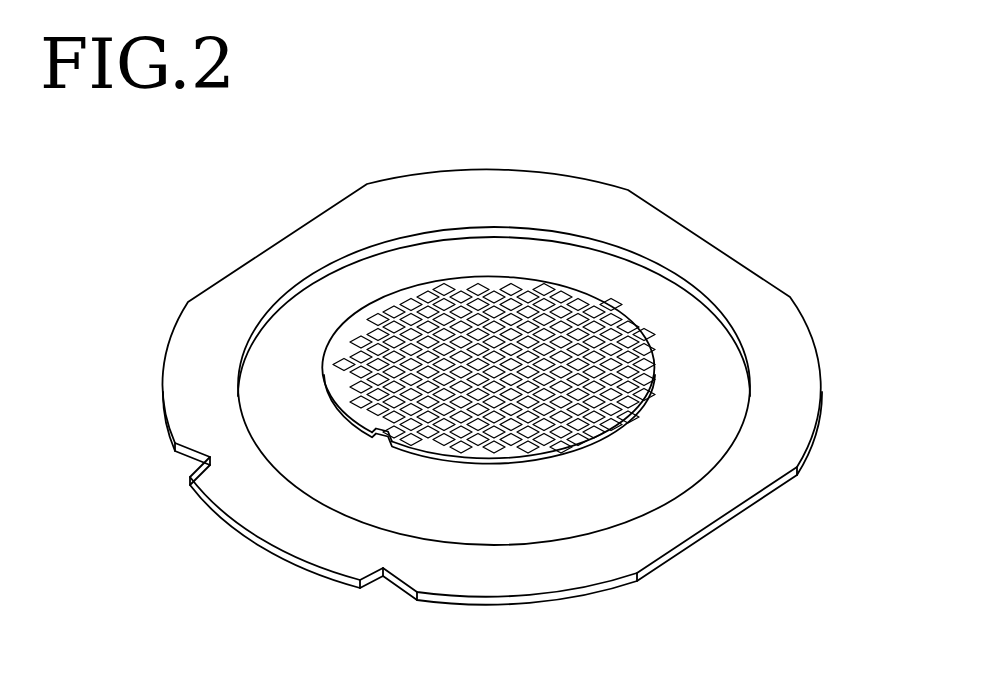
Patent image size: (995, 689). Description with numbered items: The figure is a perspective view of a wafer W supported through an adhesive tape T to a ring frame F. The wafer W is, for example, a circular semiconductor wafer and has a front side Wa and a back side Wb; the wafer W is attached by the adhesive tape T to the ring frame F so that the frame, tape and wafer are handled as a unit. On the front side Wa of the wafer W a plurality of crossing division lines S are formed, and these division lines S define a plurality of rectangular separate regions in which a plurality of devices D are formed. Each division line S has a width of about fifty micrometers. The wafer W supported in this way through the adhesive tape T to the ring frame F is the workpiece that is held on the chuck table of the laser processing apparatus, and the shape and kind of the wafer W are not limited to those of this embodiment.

The ring frame F is at (198, 358).
The adhesive tape T is at (657, 482).
The wafer W is at (563, 424).
The front side Wa is at (600, 307).
The back side Wb is at (513, 463).
The devices D is at (380, 434).
The division lines S is at (347, 330).